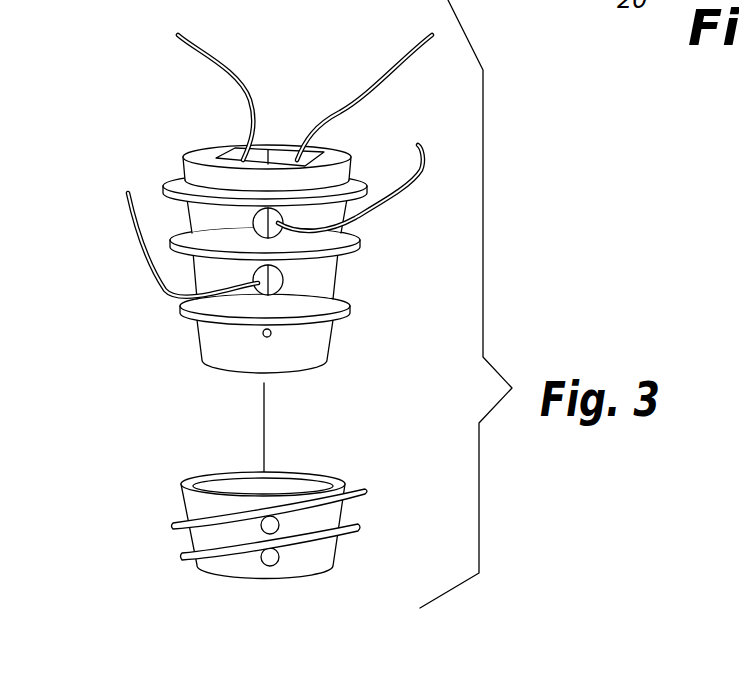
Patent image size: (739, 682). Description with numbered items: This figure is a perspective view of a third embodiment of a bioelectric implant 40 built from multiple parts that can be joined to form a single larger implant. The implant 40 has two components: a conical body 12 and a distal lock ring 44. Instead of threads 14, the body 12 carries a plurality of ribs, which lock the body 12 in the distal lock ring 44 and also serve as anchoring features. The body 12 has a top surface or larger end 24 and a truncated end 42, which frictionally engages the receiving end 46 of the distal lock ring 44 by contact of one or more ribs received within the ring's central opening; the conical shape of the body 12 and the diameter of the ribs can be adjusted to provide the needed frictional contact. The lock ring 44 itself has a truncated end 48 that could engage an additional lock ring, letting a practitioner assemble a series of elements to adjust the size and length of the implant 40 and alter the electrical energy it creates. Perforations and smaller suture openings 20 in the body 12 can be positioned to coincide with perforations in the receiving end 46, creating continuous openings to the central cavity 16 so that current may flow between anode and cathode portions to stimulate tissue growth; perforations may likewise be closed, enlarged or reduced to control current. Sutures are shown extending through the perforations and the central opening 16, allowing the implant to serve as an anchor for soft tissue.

The body 12 is at (285, 254).
The threads 14 is at (360, 527).
The cavity 16 is at (277, 152).
The suture openings 20 is at (273, 336).
The larger end 24 is at (205, 156).
The implant 40 is at (276, 225).
The truncated end 42 is at (307, 368).
The distal lock ring 44 is at (322, 531).
The receiving end 46 is at (335, 472).
The truncated end 48 is at (317, 573).